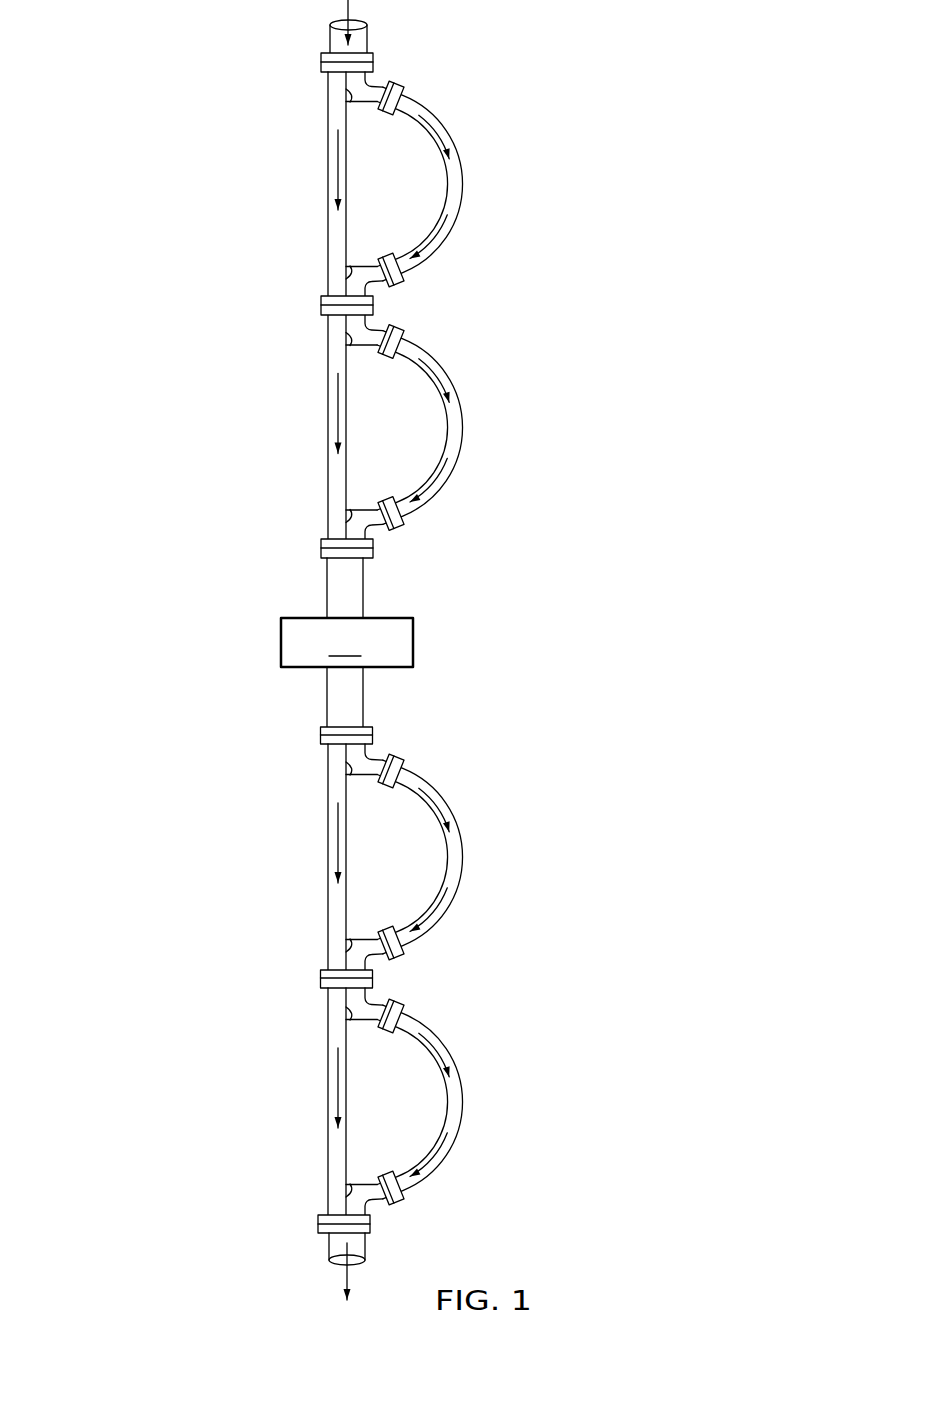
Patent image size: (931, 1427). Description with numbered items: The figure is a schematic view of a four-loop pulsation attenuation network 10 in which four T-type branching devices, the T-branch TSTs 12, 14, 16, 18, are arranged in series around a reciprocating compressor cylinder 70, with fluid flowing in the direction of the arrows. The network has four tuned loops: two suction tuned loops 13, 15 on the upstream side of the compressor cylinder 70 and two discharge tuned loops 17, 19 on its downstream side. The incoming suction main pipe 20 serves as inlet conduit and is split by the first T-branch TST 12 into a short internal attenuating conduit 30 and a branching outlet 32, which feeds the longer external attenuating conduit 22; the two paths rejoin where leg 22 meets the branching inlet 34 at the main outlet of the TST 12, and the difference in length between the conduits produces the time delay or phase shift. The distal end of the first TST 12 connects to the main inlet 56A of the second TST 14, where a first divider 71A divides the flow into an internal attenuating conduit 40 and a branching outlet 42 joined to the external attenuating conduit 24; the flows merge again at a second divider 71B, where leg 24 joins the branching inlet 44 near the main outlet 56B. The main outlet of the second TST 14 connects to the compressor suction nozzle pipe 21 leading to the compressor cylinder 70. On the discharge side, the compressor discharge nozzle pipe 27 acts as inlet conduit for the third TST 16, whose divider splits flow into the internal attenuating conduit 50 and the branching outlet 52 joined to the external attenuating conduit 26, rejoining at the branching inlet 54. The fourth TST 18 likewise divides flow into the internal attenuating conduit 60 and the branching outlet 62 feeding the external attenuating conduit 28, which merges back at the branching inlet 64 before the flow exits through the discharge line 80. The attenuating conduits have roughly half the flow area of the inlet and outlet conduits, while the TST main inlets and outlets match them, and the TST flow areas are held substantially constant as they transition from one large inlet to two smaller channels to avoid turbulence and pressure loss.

The pulsation attenuation network 10 is at (142, 150).
The first T-branch TST 12 is at (409, 183).
The first suction tuned loop 13 is at (499, 186).
The second T-branch TST 14 is at (408, 427).
The second suction tuned loop 15 is at (499, 430).
The third T-branch TST 16 is at (408, 856).
The first discharge tuned loop 17 is at (499, 859).
The fourth T-branch TST 18 is at (408, 1101).
The second discharge tuned loop 19 is at (499, 1104).
The main pipe 20 is at (367, 35).
The compressor suction nozzle pipe 21 is at (327, 598).
The external attenuating conduit 22 is at (427, 178).
The external attenuating conduit 24 is at (427, 422).
The external attenuating conduit 26 is at (427, 851).
The compressor discharge nozzle pipe 27 is at (327, 708).
The external attenuating conduit 28 is at (427, 1096).
The internal attenuating conduit 30 is at (309, 184).
The branching outlet 32 is at (365, 111).
The branching inlet 34 is at (367, 256).
The internal attenuating conduit 40 is at (309, 428).
The branching outlet 42 is at (365, 355).
The branching inlet 44 is at (367, 500).
The internal attenuating conduit 50 is at (309, 857).
The branching outlet 52 is at (365, 784).
The branching inlet 54 is at (367, 929).
The main inlet 56A is at (326, 318).
The main outlet 56B is at (325, 541).
The internal attenuating conduit 60 is at (309, 1101).
The branching outlet 62 is at (365, 1028).
The branching inlet 64 is at (367, 1174).
The reciprocating compressor cylinder 70 is at (347, 642).
The first divider 71A is at (312, 340).
The second divider 71B is at (309, 512).
The discharge line 80 is at (329, 1251).